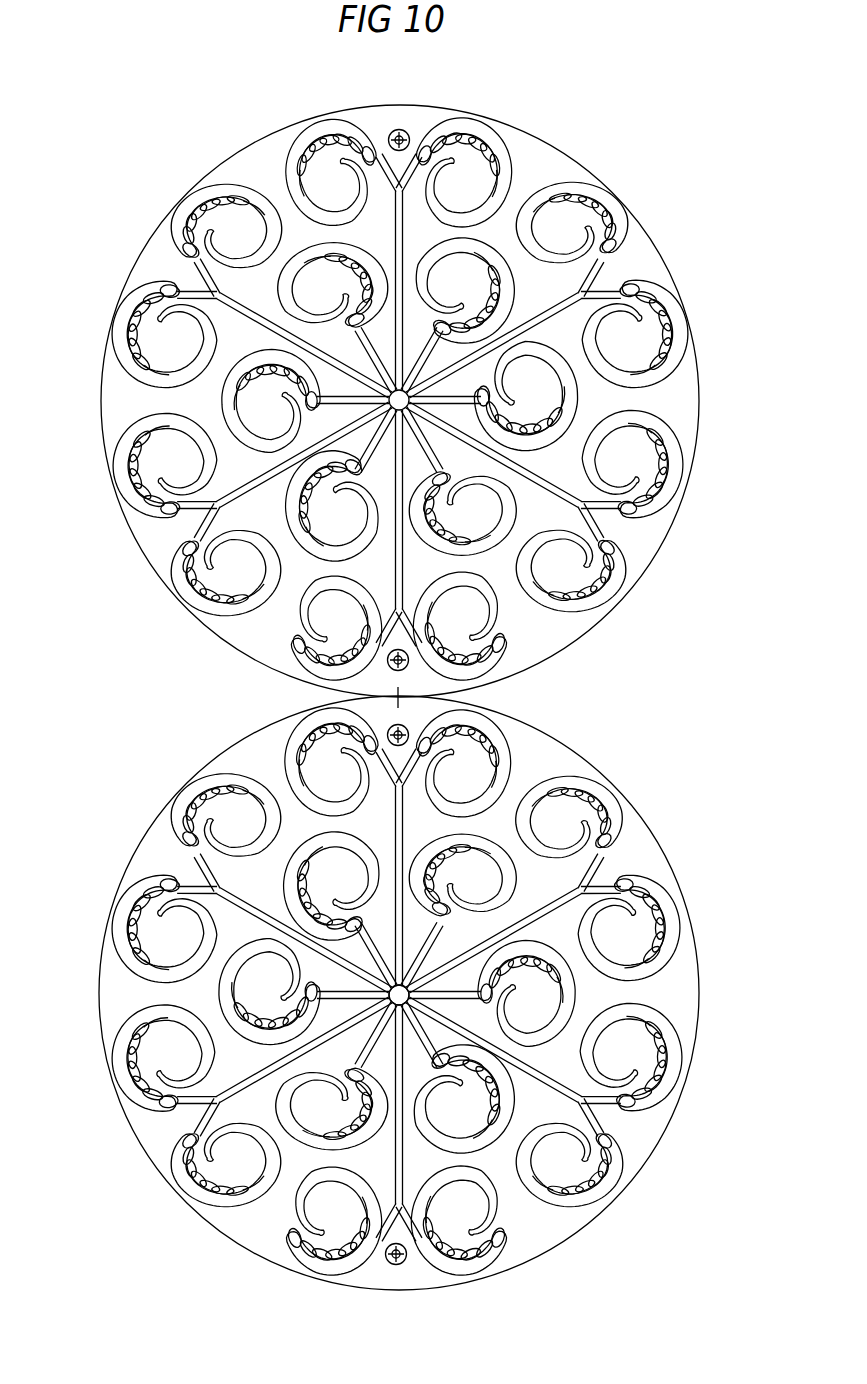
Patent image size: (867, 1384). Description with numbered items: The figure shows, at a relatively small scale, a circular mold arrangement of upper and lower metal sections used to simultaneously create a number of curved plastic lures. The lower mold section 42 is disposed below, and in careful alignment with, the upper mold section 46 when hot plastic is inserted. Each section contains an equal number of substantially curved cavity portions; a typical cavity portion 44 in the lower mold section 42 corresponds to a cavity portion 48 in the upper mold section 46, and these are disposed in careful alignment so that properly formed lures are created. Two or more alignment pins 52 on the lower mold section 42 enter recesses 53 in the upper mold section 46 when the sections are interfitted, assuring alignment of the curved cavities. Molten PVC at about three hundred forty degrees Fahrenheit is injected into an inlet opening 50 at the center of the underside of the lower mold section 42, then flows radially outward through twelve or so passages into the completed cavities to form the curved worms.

The lower mold section 42 is at (698, 995).
The cavity portion 44 is at (228, 995).
The upper mold section 46 is at (698, 383).
The cavity portion 48 is at (228, 400).
The inlet opening 50 is at (404, 986).
The alignment pins 52 is at (405, 726).
The recesses 53 is at (401, 130).